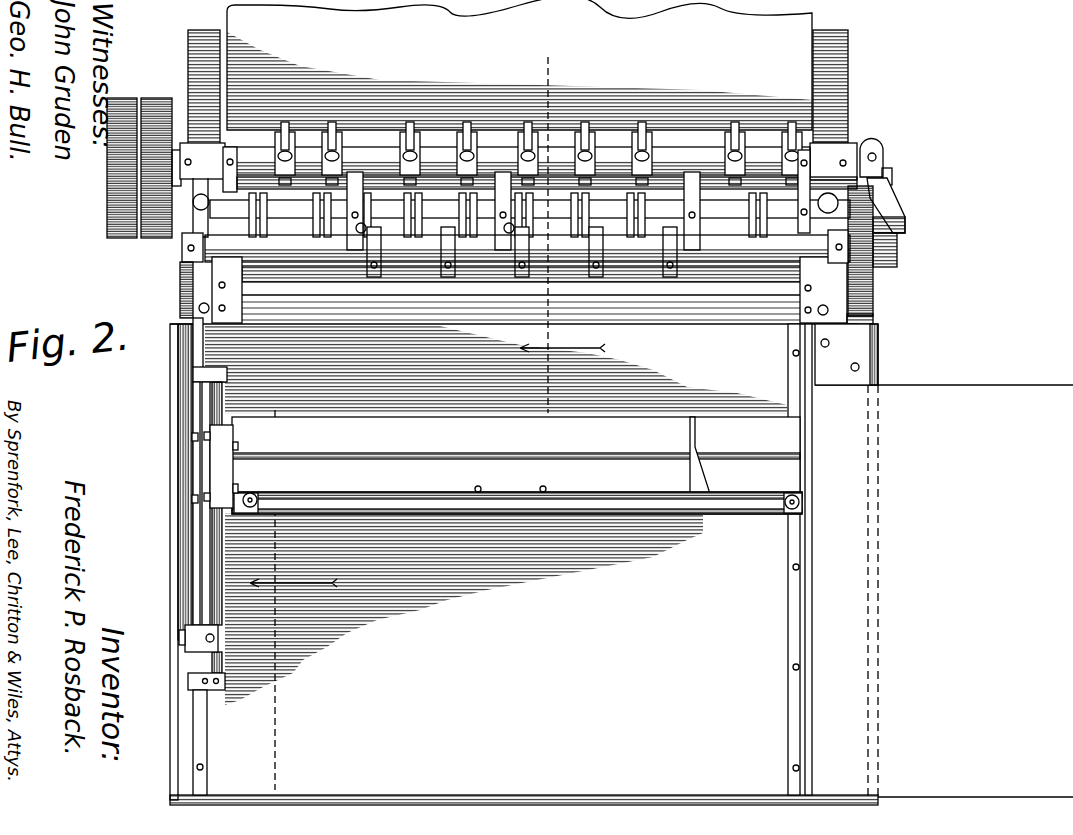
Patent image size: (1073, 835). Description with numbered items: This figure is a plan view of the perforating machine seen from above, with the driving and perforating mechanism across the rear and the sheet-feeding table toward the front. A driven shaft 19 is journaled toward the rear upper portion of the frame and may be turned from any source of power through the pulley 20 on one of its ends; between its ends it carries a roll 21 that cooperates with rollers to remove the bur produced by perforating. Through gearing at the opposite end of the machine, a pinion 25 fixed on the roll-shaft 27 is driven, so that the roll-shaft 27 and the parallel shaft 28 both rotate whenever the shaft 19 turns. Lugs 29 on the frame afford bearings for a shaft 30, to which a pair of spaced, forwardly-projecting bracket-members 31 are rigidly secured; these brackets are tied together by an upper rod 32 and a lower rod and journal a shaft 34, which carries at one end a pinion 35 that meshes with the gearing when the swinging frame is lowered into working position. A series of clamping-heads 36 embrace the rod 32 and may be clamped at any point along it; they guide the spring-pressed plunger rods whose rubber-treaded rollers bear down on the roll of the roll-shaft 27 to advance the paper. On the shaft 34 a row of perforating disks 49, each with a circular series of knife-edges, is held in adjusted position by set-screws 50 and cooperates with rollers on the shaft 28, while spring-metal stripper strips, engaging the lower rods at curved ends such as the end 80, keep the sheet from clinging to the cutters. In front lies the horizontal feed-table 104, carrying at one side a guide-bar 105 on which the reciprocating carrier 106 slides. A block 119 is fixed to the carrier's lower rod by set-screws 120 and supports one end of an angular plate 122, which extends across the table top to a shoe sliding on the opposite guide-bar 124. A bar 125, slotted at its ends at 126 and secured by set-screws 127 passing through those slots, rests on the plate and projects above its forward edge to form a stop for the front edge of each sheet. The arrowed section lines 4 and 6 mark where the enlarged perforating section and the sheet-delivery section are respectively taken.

The shaft 19 is at (181, 200).
The pulley 20 is at (122, 163).
The roll 21 is at (378, 177).
The pinion 25 is at (862, 289).
The roll-shaft 27 is at (780, 272).
The shaft 28 is at (658, 233).
The lugs 29 is at (213, 152).
The shaft 30 is at (686, 157).
The bracket-members 31 is at (196, 143).
The upper rod 32 is at (413, 252).
The shaft 34 is at (747, 216).
The pinion 35 is at (855, 211).
The clamping-heads 36 is at (372, 258).
The disks 49 is at (645, 211).
The set-screws 50 is at (530, 216).
The curved end 80 is at (425, 177).
The feed-table 104 is at (621, 564).
The guide-bar 105 is at (207, 719).
The reciprocating carrier 106 is at (213, 578).
The block 119 is at (228, 445).
The set-screws 120 is at (192, 497).
The plate 122 is at (516, 458).
The guide-bar 124 is at (790, 612).
The bar 125 is at (512, 516).
The slots 126 is at (253, 507).
The set-screws 127 is at (257, 498).
The section line 4 is at (562, 361).
The section line 6 is at (293, 596).